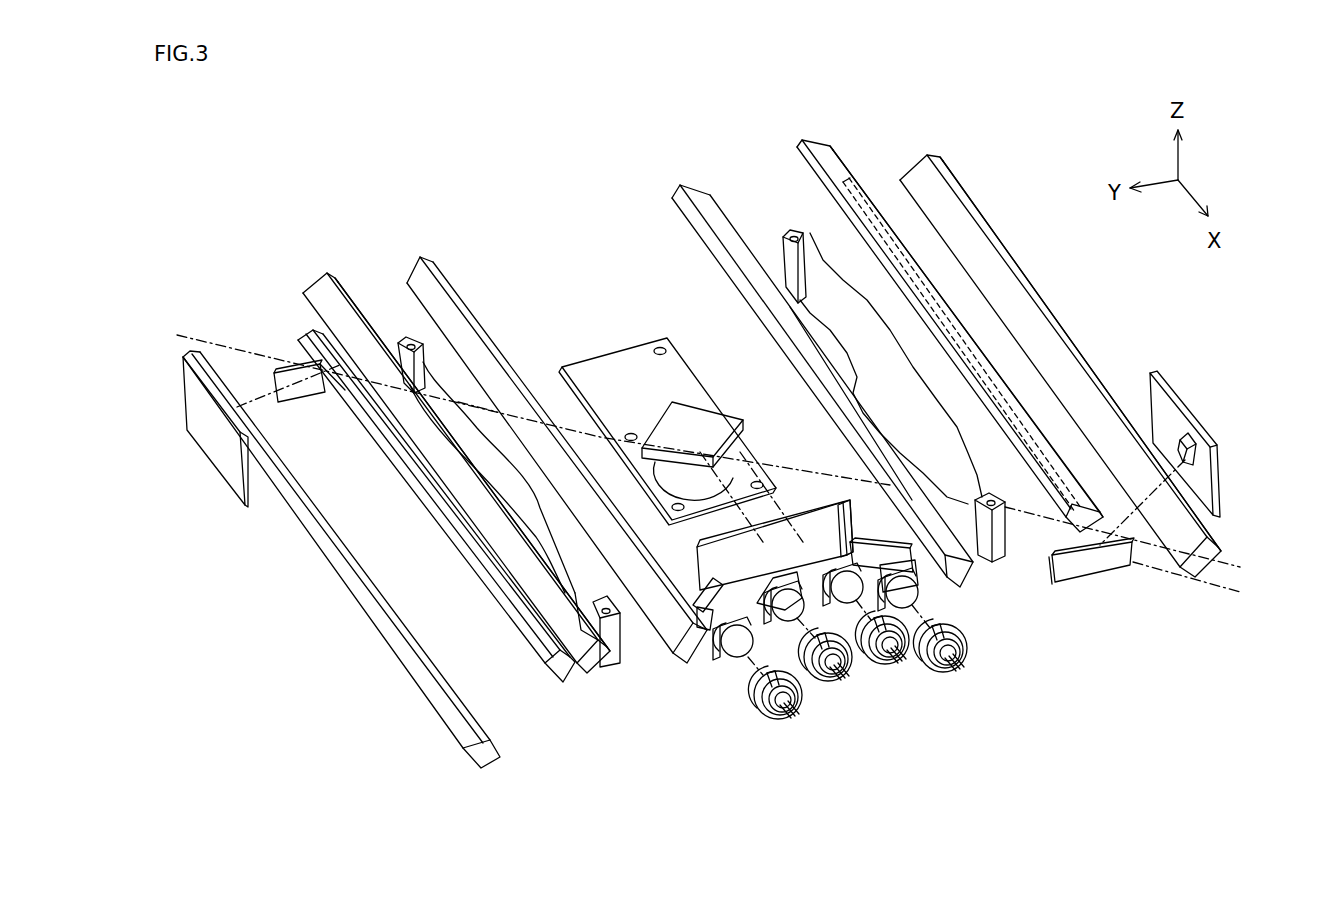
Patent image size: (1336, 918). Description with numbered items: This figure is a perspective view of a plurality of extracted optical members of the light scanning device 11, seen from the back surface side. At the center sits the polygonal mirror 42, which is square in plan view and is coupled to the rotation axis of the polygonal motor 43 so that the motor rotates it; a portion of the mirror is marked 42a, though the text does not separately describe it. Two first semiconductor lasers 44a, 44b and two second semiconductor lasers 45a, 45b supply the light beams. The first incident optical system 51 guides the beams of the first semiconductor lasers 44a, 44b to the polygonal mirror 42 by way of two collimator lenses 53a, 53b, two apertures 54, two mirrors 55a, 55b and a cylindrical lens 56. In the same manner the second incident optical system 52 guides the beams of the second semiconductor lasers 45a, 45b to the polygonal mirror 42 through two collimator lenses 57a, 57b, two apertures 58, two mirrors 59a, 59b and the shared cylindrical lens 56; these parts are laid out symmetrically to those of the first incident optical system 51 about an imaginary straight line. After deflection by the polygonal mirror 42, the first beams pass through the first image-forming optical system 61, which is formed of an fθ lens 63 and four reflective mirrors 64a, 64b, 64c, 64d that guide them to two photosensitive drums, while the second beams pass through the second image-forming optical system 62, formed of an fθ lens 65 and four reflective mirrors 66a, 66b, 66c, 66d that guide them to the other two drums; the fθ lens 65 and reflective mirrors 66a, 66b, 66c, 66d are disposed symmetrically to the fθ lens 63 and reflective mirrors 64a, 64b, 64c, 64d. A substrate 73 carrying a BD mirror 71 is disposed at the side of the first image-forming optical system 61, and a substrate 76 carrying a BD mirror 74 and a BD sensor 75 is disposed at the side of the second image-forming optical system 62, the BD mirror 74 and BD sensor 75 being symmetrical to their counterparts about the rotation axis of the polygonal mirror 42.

The light scanning device 11 is at (511, 162).
The polygonal mirror 42 is at (665, 410).
The image sensor 42a is at (697, 447).
The polygonal motor 43 is at (668, 470).
The first semiconductor laser 44a is at (832, 690).
The first semiconductor laser 44b is at (768, 720).
The second semiconductor laser 45a is at (947, 673).
The second semiconductor laser 45b is at (890, 667).
The first incident optical system 51 is at (668, 745).
The second incident optical system 52 is at (1007, 635).
The collimator lens 53a is at (785, 627).
The collimator lens 53b is at (730, 650).
The aperture 54 is at (697, 665).
The mirror 55a is at (785, 587).
The mirror 55b is at (700, 595).
The cylindrical lens 56 is at (703, 538).
The collimator lens 57a is at (923, 595).
The collimator lens 57b is at (845, 599).
The aperture 58 is at (913, 577).
The mirror 59a is at (870, 545).
The mirror 59b is at (830, 560).
The first image-forming optical system 61 is at (255, 270).
The second image-forming optical system 62 is at (765, 145).
The fθ lens 63 is at (423, 355).
The reflective mirror 64a is at (435, 700).
The reflective mirror 64b is at (483, 572).
The reflective mirror 64c is at (330, 292).
The reflective mirror 64d is at (415, 275).
The fθ lens 65 is at (823, 257).
The reflective mirror 66a is at (1218, 553).
The reflective mirror 66b is at (877, 207).
The reflective mirror 66c is at (825, 150).
The reflective mirror 66d is at (700, 200).
The BD mirror 71 is at (318, 390).
The substrate 73 is at (218, 450).
The BD mirror 74 is at (1095, 570).
The BD sensor 75 is at (1190, 435).
The substrate 76 is at (1177, 397).